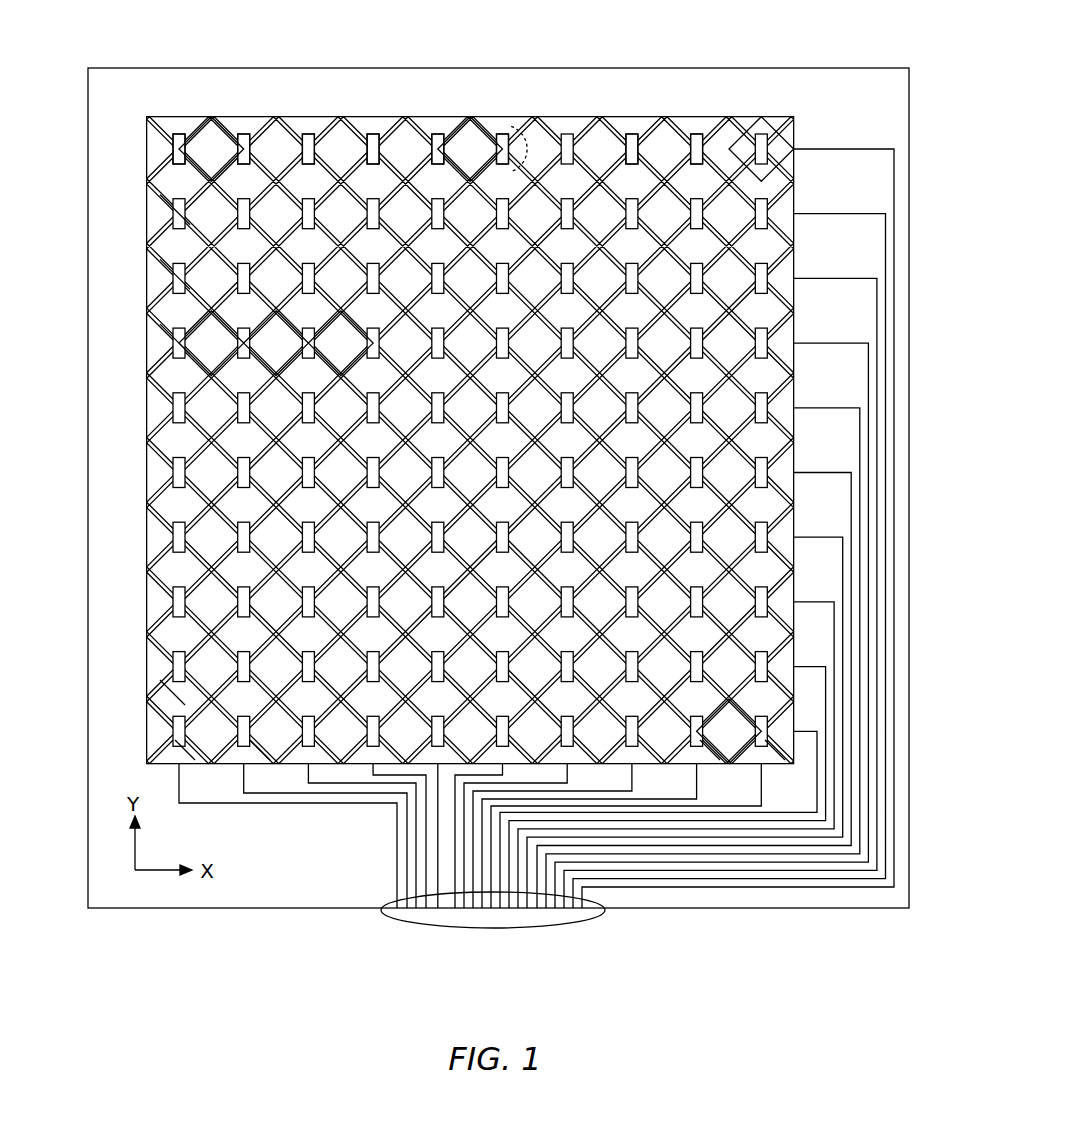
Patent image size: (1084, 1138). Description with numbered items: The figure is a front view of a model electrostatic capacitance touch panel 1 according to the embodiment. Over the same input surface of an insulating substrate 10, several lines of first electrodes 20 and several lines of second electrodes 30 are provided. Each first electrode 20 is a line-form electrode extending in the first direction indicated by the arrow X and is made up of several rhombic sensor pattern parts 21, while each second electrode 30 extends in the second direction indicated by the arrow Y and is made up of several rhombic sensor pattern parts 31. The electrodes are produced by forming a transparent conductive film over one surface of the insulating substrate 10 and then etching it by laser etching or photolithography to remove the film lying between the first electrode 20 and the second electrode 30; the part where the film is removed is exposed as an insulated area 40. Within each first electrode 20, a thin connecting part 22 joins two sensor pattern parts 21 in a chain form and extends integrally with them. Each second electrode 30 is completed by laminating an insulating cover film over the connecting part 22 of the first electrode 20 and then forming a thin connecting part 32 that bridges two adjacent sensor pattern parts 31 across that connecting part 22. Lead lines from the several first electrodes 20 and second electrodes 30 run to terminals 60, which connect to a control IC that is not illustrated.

The electrostatic capacitance touch panel 1 is at (775, 57).
The insulating substrate 10 is at (666, 68).
The first electrode 20 is at (146, 148).
The sensor pattern part 21 is at (206, 132).
The connecting part 22 is at (437, 136).
The second electrode 30 is at (172, 125).
The sensor pattern part 31 is at (173, 307).
The connecting part 32 is at (373, 136).
The insulated area 40 is at (455, 130).
The terminals 60 is at (490, 928).